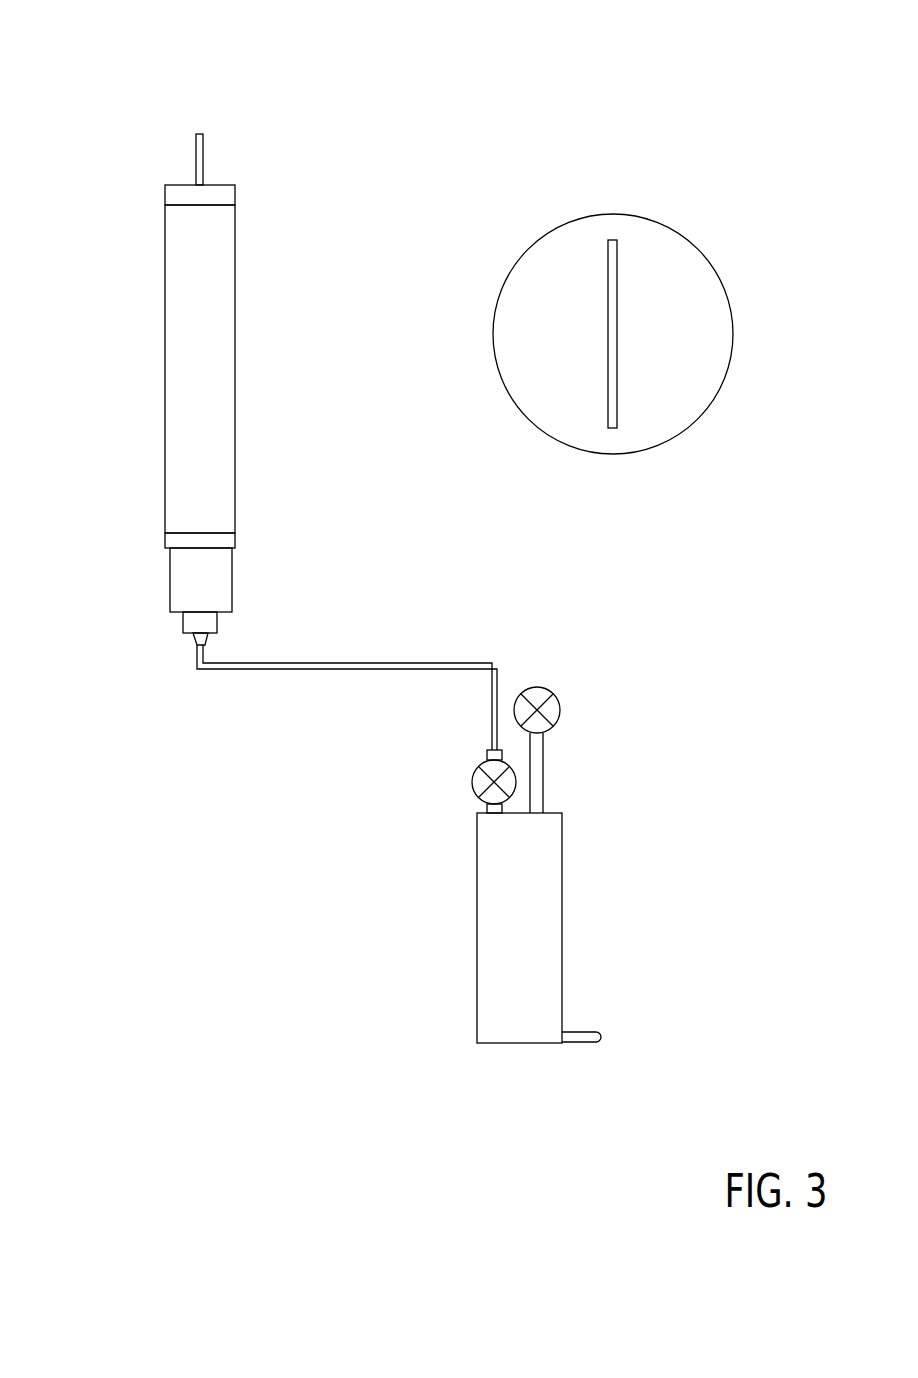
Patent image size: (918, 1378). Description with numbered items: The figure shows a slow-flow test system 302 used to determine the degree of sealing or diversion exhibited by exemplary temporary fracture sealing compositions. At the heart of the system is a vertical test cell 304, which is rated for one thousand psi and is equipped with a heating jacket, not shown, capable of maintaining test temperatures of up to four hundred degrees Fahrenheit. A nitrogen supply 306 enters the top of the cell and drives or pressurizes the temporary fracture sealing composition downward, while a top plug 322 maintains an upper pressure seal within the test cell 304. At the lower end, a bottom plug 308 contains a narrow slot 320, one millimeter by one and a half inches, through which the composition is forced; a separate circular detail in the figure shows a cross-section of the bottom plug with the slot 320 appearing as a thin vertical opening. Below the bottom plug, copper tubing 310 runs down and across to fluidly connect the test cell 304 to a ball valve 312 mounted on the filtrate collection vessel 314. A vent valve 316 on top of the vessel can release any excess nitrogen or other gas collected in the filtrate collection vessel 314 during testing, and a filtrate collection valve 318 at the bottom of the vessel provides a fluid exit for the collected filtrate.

The slow-flow test system 302 is at (146, 98).
The test cell 304 is at (165, 353).
The nitrogen supply 306 is at (196, 150).
The bottom plug 308 is at (168, 535).
The copper tubing 310 is at (352, 663).
The ball valve 312 is at (472, 776).
The filtrate collection vessel 314 is at (477, 962).
The vent valve 316 is at (548, 691).
The filtrate collection valve 318 is at (596, 1032).
The slot 320 is at (708, 237).
The top plug 322 is at (165, 197).